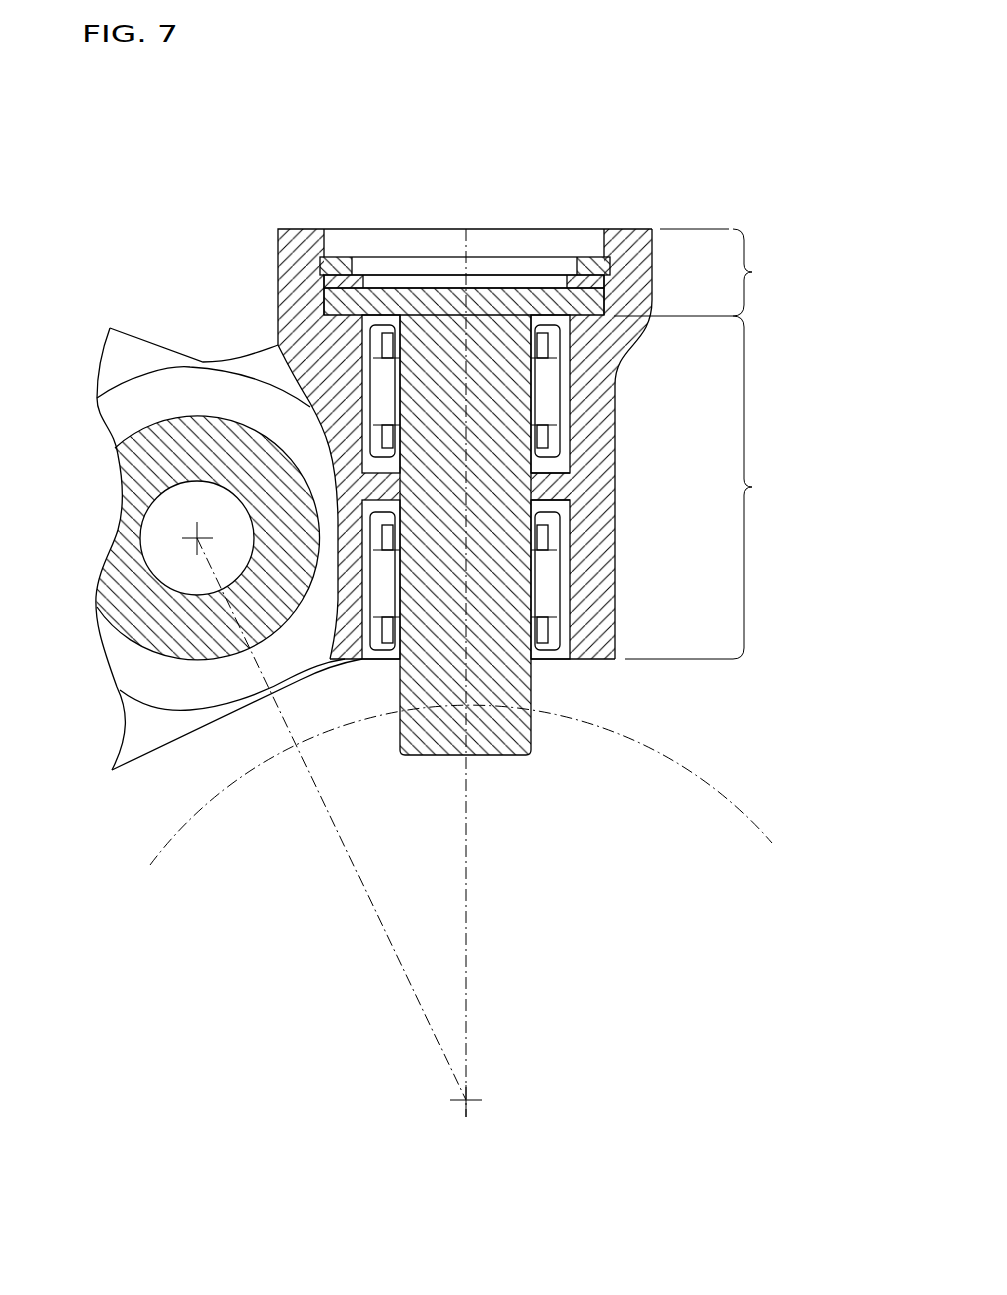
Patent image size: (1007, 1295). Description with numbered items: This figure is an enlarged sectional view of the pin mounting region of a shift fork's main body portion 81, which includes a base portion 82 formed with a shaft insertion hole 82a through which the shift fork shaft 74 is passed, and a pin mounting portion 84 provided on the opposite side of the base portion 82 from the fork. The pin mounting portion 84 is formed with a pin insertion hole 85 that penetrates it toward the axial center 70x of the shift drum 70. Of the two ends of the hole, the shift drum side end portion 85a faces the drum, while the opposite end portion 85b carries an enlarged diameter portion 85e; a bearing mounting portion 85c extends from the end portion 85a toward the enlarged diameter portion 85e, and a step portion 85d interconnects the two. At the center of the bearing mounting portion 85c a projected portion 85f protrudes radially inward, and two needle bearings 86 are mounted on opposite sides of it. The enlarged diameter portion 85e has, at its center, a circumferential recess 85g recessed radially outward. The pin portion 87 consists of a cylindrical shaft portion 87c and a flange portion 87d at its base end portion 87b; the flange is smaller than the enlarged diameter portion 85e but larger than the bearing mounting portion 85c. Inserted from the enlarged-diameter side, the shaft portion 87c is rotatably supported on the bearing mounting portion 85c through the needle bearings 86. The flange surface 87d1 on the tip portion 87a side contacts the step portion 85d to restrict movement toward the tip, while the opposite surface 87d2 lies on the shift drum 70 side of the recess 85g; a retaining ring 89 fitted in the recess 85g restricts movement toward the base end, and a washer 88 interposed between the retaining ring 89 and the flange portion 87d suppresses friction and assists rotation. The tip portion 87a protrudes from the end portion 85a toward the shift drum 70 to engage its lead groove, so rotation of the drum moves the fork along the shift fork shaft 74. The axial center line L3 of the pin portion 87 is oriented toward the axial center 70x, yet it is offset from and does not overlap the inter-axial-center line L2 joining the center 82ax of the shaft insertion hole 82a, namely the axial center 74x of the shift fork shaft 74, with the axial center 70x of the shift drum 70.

The shift drum 70 is at (713, 782).
The axial center of the shift drum 70x is at (473, 1107).
The shift fork shaft 74 is at (159, 657).
The axial center of the shift fork shaft 74x is at (194, 542).
The main body portion 81 is at (328, 494).
The base portion 82 is at (183, 580).
The shaft insertion hole 82a is at (132, 637).
The center of the shaft insertion hole 82ax is at (42, 585).
The pin mounting portion 84 is at (298, 232).
The pin insertion hole 85 is at (568, 442).
The shift drum side end portion 85a is at (362, 660).
The end portion opposite to the shift drum side end portion 85b is at (324, 232).
The bearing mounting portion 85c is at (585, 419).
The step portion 85d is at (598, 312).
The enlarged diameter portion 85e is at (597, 235).
The projected portion 85f is at (545, 487).
The recess 85g is at (602, 275).
The needle bearing 86 is at (385, 378).
The pin portion 87 is at (475, 494).
The tip portion 87a is at (492, 757).
The base end portion 87b is at (480, 298).
The shaft portion 87c is at (530, 683).
The flange portion 87d is at (464, 236).
The surface on the tip portion side of the flange portion 87d1 is at (402, 312).
The surface on the base end portion side of the flange portion 87d2 is at (378, 275).
The washer 88 is at (325, 263).
The retaining ring 89 is at (336, 258).
The inter-axial-center line L2 is at (387, 933).
The axial center line of the pin portion L3 is at (466, 940).